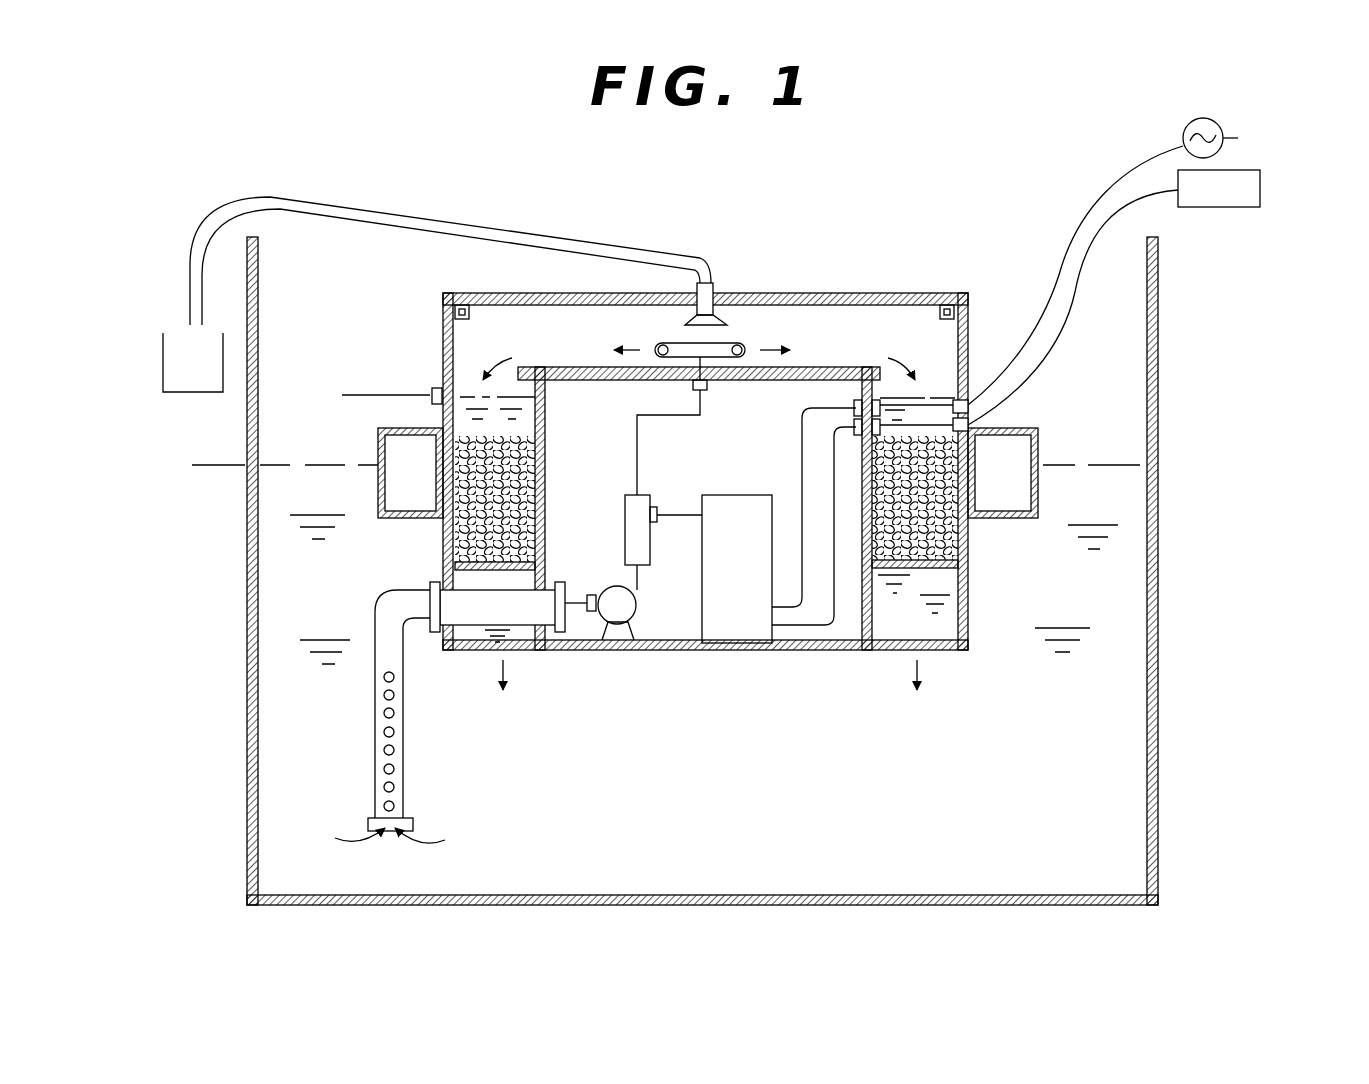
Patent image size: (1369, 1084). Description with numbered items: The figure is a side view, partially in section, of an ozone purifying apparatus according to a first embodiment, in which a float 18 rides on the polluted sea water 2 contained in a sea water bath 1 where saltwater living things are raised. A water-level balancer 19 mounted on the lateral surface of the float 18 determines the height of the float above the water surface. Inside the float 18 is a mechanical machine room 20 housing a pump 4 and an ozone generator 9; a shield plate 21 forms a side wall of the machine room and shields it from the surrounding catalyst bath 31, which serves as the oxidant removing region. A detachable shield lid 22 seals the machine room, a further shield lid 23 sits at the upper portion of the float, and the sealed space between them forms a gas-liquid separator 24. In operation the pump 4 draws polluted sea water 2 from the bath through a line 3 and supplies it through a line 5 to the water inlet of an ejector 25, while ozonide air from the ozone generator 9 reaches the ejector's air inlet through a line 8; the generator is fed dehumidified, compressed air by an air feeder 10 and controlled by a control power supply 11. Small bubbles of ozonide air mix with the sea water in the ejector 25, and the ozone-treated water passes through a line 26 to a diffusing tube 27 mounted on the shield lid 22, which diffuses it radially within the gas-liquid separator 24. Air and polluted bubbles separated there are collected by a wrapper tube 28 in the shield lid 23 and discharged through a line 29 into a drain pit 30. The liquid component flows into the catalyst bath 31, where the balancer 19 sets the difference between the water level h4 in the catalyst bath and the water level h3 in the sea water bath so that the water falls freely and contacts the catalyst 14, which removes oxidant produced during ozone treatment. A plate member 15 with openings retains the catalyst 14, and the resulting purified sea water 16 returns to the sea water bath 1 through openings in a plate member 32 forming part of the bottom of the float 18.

The sea water bath 1 is at (1158, 355).
The polluted sea water 2 is at (1045, 465).
The line 3 is at (410, 790).
The pump 4 is at (640, 600).
The line 5 is at (640, 572).
The line 8 is at (680, 515).
The ozone generator 9 is at (735, 495).
The air feeder 10 is at (1262, 198).
The control power supply 11 is at (1226, 128).
The catalyst 14 is at (532, 420).
The plate member 15 is at (440, 600).
The purified sea water 16 is at (540, 648).
The float 18 is at (972, 632).
The water-level balancer 19 is at (1040, 505).
The mechanical machine room 20 is at (672, 650).
The shield plate 21 is at (545, 548).
The shield lid 22 is at (818, 375).
The shield lid 23 is at (915, 300).
The gas-liquid separator 24 is at (828, 322).
The ejector 25 is at (625, 515).
The line 26 is at (640, 432).
The diffusing tube 27 is at (735, 342).
The wrapper tube 28 is at (713, 285).
The line 29 is at (548, 240).
The drain pit 30 is at (185, 320).
The catalyst bath 31 is at (440, 390).
The plate member 32 is at (470, 650).
The water level h3 is at (645, 466).
The water level h4 is at (369, 396).